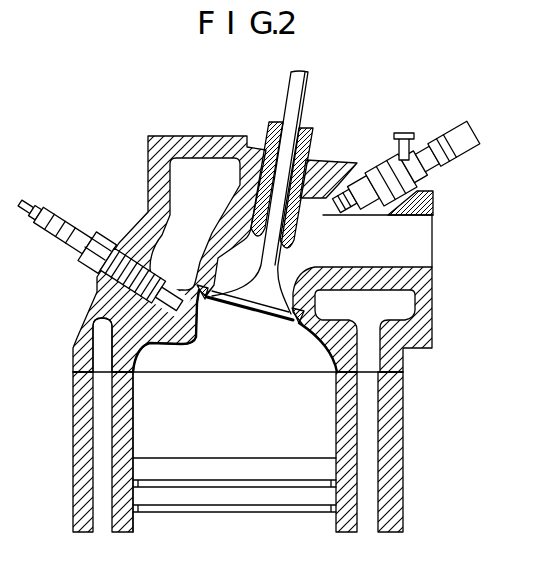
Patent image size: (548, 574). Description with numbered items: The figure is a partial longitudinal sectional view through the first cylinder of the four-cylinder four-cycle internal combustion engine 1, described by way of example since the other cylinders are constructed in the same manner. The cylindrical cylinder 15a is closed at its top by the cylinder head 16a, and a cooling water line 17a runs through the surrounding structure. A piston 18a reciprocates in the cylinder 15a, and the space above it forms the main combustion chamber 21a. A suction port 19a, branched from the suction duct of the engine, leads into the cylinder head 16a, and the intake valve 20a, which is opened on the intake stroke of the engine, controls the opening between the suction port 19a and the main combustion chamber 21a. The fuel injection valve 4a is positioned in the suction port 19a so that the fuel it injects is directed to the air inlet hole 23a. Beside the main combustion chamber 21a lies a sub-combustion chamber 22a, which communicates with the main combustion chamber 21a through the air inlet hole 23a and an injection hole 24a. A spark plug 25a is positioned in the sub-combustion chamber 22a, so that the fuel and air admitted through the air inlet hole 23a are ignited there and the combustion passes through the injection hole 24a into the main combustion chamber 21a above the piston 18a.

The internal combustion engine 1 is at (143, 157).
The fuel injection valve 4a is at (469, 128).
The cylindrical cylinder 15a is at (422, 400).
The cylinder head 16a is at (425, 297).
The cooling water line 17a is at (102, 458).
The piston 18a is at (279, 508).
The suction port 19a is at (422, 242).
The intake valve 20a is at (309, 88).
The main combustion chamber 21a is at (138, 417).
The sub-combustion chamber 22a is at (170, 333).
The air inlet hole 23a is at (196, 307).
The injection hole 24a is at (160, 350).
The spark plug 25a is at (58, 226).